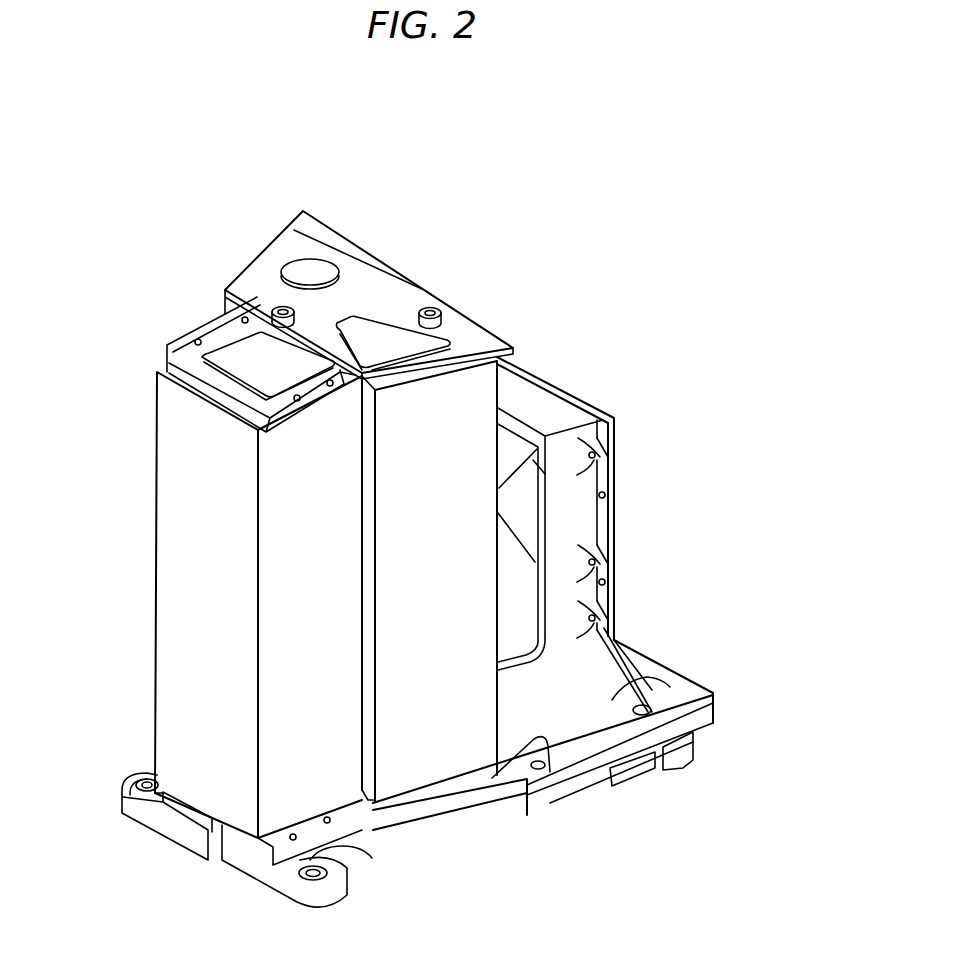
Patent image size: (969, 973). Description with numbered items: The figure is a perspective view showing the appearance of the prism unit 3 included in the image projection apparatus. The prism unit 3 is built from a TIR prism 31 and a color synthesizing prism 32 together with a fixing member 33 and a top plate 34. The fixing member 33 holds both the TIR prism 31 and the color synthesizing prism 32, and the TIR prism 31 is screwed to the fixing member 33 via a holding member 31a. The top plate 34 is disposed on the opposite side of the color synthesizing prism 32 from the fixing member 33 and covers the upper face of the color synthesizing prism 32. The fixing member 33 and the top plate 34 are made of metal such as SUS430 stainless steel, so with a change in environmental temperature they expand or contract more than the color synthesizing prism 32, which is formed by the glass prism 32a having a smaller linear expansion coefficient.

The prism unit 3 is at (679, 130).
The TIR prism 31 is at (514, 460).
The holding member 31a is at (565, 410).
The color synthesizing prism 32 is at (123, 472).
The glass prism 32a is at (187, 600).
The fixing member 33 is at (390, 840).
The top plate 34 is at (375, 290).